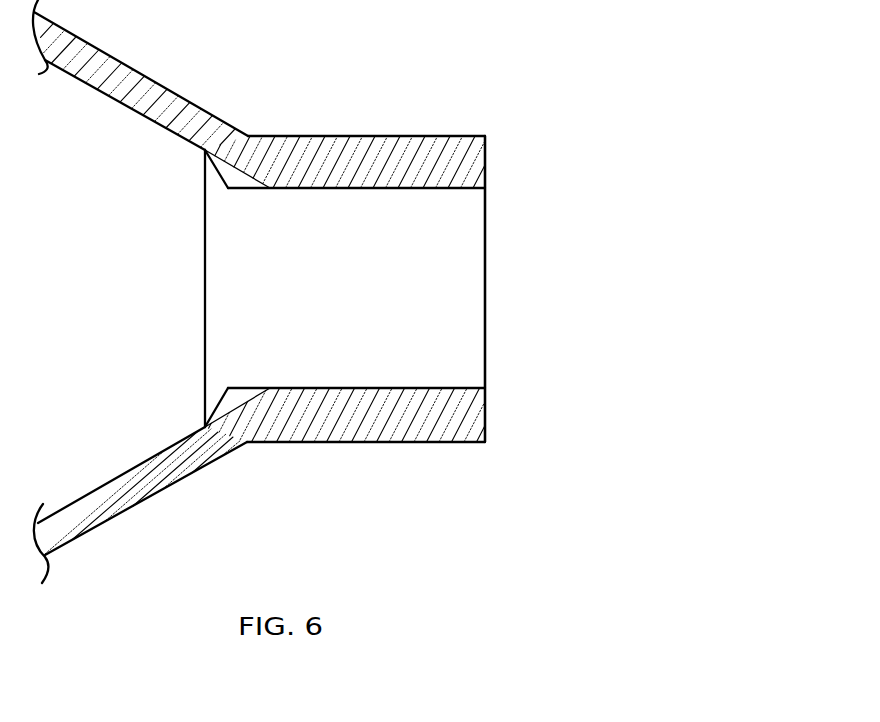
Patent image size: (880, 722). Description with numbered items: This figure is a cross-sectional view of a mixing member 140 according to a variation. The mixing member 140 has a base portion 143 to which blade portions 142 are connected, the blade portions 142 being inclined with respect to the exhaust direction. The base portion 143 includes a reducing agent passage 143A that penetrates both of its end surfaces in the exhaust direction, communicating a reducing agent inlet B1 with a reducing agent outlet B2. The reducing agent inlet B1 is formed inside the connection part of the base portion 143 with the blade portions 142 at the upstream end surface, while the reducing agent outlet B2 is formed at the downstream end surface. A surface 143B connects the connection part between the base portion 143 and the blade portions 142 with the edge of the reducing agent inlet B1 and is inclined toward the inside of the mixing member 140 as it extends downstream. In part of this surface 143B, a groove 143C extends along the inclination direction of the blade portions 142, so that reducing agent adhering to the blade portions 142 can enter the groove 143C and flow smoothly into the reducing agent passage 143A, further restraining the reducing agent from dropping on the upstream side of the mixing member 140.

The mixing member 140 is at (427, 53).
The blade portions 142 is at (155, 97).
The base portion 143 is at (332, 145).
The reducing agent passage 143A is at (363, 301).
The surface 143B is at (208, 156).
The groove 143C is at (248, 179).
The reducing agent inlet B1 is at (205, 298).
The reducing agent outlet B2 is at (487, 267).